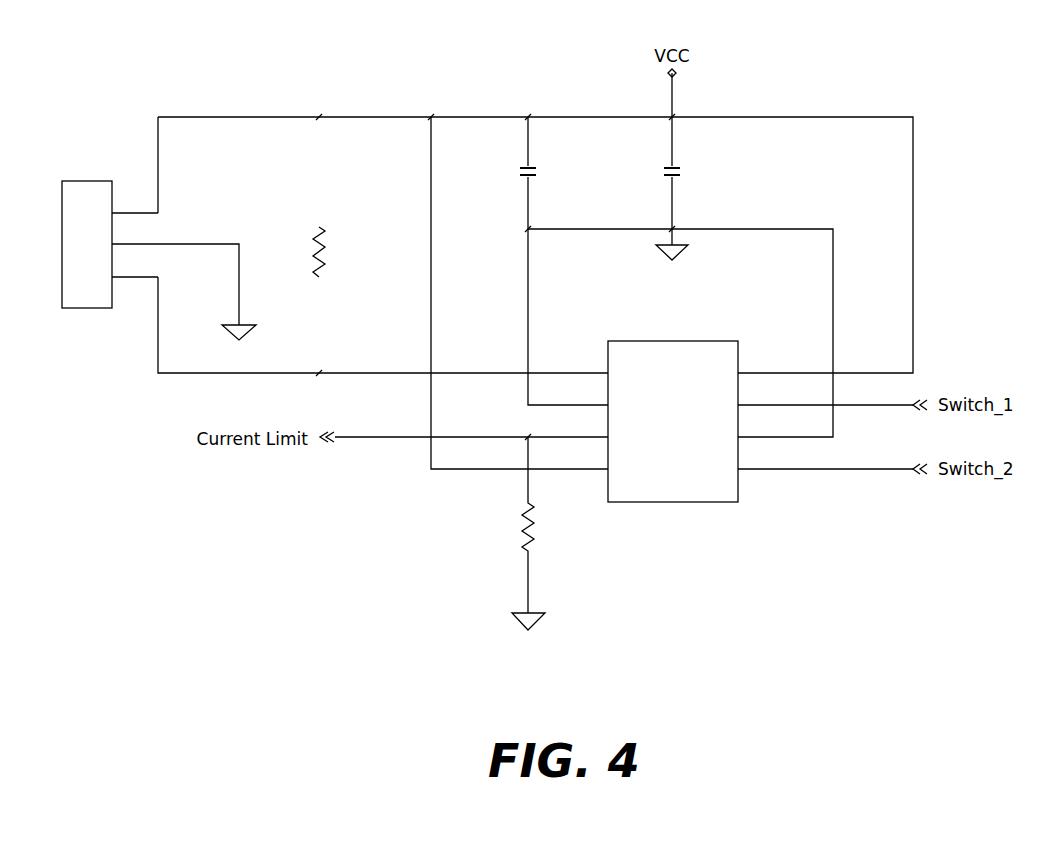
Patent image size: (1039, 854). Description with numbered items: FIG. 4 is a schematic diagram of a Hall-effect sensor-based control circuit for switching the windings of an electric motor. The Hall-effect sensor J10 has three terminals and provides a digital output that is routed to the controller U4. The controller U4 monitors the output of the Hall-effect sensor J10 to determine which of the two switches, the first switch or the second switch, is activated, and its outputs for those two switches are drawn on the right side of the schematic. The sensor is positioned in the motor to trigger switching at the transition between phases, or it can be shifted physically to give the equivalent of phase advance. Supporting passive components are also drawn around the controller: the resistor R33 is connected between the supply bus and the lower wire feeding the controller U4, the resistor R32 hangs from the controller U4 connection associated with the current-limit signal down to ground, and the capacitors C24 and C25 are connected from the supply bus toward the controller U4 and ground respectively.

The Hall-effect sensor J10 is at (159, 244).
The resistor R33 is at (339, 254).
The resistor R32 is at (548, 533).
The capacitor C24 is at (553, 169).
The capacitor C25 is at (696, 169).
The controller U4 is at (670, 422).